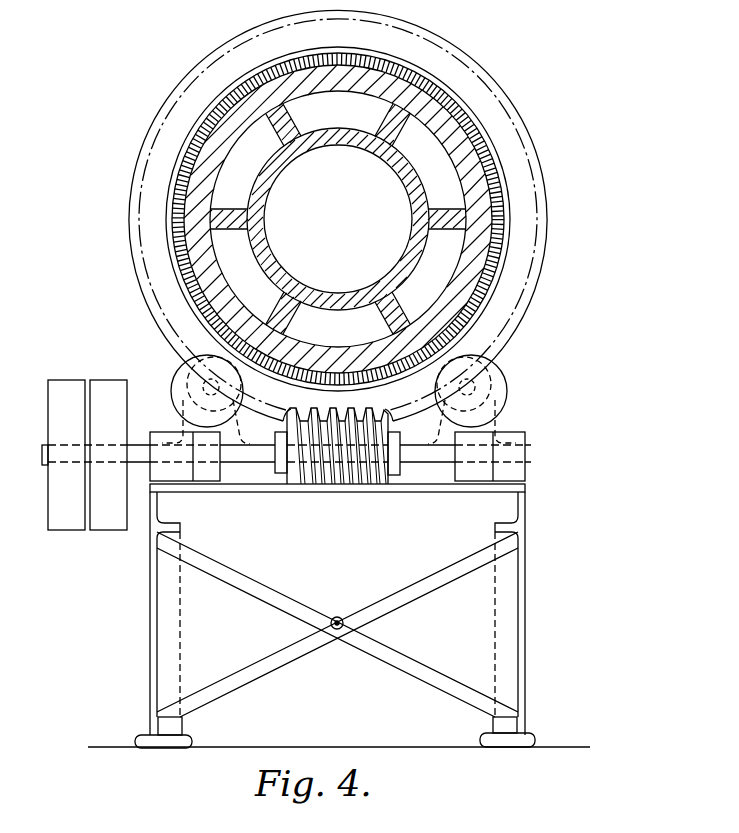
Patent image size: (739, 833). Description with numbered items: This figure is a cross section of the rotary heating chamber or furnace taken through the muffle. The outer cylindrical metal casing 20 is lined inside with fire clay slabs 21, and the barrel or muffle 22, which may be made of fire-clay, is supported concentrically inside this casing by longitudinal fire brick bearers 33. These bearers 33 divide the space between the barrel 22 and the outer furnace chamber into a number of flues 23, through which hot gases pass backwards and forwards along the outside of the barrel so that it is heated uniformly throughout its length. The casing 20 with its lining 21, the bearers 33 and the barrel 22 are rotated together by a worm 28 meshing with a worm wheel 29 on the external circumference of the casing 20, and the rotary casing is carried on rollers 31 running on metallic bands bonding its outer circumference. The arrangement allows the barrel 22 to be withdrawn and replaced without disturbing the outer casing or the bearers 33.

The cylindrical metal casing 20 is at (487, 313).
The fire clay slabs 21 is at (487, 213).
The barrel or muffle 22 is at (271, 263).
The flues 23 is at (338, 243).
The worm 28 is at (351, 493).
The worm wheel 29 is at (505, 343).
The carrying rollers 31 is at (506, 391).
The fire brick bearers 33 is at (297, 113).